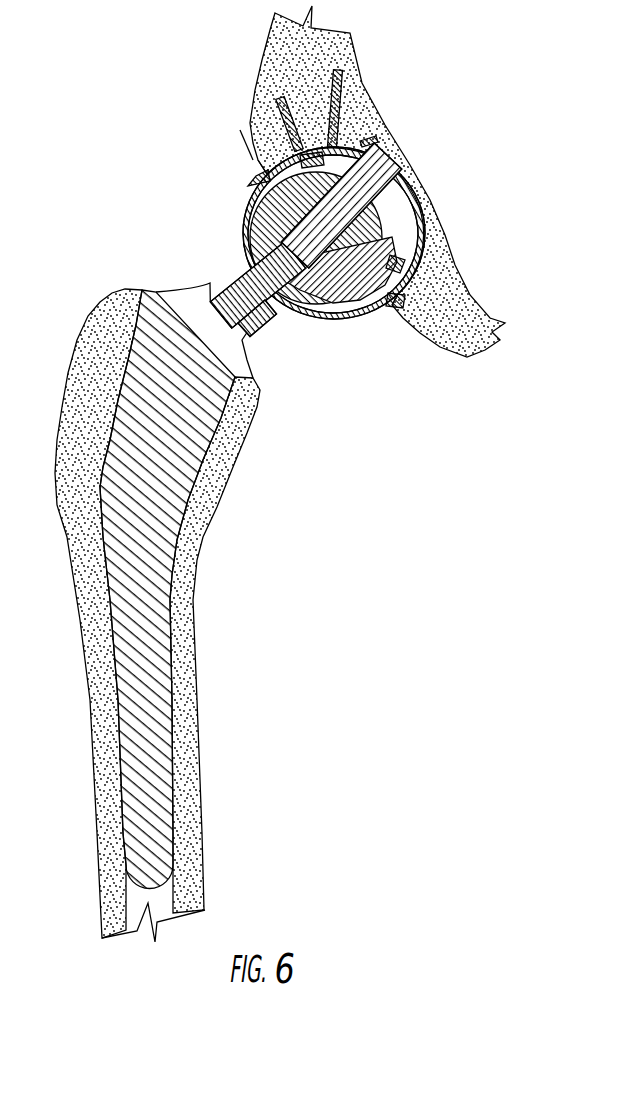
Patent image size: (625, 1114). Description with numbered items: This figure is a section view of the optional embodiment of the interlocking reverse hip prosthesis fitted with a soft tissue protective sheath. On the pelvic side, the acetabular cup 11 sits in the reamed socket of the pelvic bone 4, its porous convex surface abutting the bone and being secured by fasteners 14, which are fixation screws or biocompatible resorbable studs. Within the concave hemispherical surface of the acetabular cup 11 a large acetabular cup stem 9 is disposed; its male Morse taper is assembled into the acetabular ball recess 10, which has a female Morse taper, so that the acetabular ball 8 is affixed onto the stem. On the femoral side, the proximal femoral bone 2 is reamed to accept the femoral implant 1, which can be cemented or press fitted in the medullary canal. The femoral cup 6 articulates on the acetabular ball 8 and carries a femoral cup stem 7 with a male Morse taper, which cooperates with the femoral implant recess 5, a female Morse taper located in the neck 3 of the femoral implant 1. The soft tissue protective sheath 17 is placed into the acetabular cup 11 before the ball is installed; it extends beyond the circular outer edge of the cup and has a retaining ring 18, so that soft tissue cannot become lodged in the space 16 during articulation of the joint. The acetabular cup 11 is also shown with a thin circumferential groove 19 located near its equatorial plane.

The femoral implant 1 is at (165, 624).
The proximal femoral bone 2 is at (73, 540).
The neck 3 is at (178, 306).
The pelvic bone 4 is at (282, 73).
The femoral implant recess 5 is at (246, 334).
The femoral cup 6 is at (306, 320).
The femoral cup stem 7 is at (214, 281).
The acetabular ball 8 is at (254, 218).
The acetabular cup stem 9 is at (393, 173).
The acetabular ball recess 10 is at (243, 249).
The acetabular cup 11 is at (428, 247).
The fasteners 14 is at (343, 100).
The space 16 is at (374, 141).
The soft tissue protective sheath 17 is at (390, 308).
The retaining ring 18 is at (350, 165).
The circumferential groove 19 is at (253, 141).